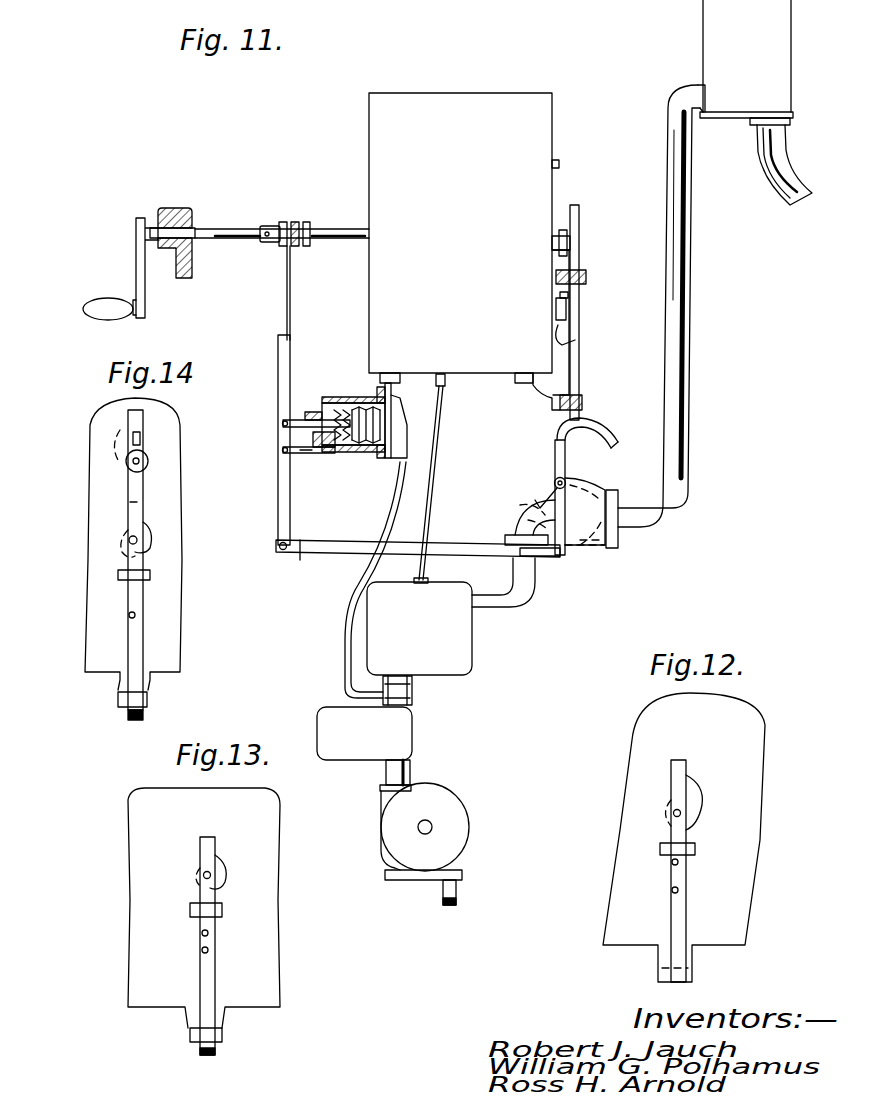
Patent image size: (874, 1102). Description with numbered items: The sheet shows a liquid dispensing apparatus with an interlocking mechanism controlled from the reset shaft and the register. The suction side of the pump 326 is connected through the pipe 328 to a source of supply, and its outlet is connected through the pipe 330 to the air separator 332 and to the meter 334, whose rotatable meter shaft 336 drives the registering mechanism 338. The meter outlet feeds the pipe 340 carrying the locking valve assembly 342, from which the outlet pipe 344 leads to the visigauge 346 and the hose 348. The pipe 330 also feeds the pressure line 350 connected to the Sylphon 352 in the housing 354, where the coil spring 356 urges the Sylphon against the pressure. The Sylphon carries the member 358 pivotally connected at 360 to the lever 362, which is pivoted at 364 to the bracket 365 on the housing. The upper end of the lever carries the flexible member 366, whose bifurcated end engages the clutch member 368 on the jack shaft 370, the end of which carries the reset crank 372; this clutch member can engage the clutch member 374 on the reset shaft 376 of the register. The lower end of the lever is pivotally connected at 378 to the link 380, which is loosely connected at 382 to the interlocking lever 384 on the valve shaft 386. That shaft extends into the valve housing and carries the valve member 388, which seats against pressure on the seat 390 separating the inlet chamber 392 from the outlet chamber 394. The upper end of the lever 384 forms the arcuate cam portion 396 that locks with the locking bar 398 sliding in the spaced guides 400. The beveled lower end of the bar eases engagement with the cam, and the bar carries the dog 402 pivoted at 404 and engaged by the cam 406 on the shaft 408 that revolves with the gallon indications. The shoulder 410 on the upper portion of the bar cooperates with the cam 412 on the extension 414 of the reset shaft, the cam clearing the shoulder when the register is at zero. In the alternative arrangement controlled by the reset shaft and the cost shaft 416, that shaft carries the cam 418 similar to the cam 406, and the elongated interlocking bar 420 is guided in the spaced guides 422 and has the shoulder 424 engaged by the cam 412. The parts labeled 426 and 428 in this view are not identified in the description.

In FIG. 11, the pump 326 is at (456, 830).
In FIG. 11, the pipe 328 is at (458, 892).
In FIG. 11, the pipe 330 is at (412, 770).
In FIG. 11, the air separator 332 is at (412, 740).
In FIG. 11, the meter 334 is at (456, 605).
In FIG. 11, the meter shaft 336 is at (434, 437).
In FIG. 11, the registering mechanism 338 is at (444, 100).
In FIG. 11, the pipe 340 is at (536, 590).
In FIG. 11, the locking valve assembly 342 is at (606, 548).
In FIG. 11, the outlet pipe 344 is at (692, 422).
In FIG. 11, the visigauge 346 is at (728, 106).
In FIG. 11, the hose 348 is at (788, 168).
In FIG. 11, the pressure line 350 is at (345, 615).
In FIG. 11, the Sylphon 352 is at (358, 455).
In FIG. 11, the housing 354 is at (348, 412).
In FIG. 11, the coil spring 356 is at (346, 412).
In FIG. 11, the member 358 is at (302, 420).
In FIG. 11, the pivotal connection 360 is at (284, 420).
In FIG. 11, the lever 362 is at (278, 352).
In FIG. 11, the pivot 364 is at (283, 448).
In FIG. 11, the bracket 365 is at (300, 453).
In FIG. 11, the flexible member 366 is at (292, 300).
In FIG. 11, the clutch member 368 is at (278, 226).
In FIG. 11, the jack shaft 370 is at (210, 232).
In FIG. 11, the reset crank 372 is at (140, 258).
In FIG. 11, the clutch member 374 is at (305, 222).
In FIG. 11, the reset shaft 376 is at (333, 229).
In FIG. 11, the pivotal connection 378 is at (306, 548).
In FIG. 11, the link 380 is at (308, 558).
In FIG. 11, the loose connection 382 is at (565, 556).
In FIG. 11, the interlocking lever 384 is at (558, 478).
In FIG. 11, the valve shaft 386 is at (578, 468).
In FIG. 11, the valve member 388 is at (618, 522).
In FIG. 11, the seat 390 is at (535, 505).
In FIG. 11, the inlet chamber 392 is at (528, 520).
In FIG. 11, the outlet chamber 394 is at (600, 500).
In FIG. 11, the arcuate cam portion 396 is at (601, 424).
In FIG. 11, the locking bar 398 is at (574, 318).
In FIG. 13, the locking bar 398 is at (212, 980).
In FIG. 12, the locking bar 398 is at (686, 840).
In FIG. 11, the spaced guides 400 is at (586, 276).
In FIG. 13, the spaced guides 400 is at (222, 908).
In FIG. 12, the spaced guides 400 is at (697, 848).
In FIG. 13, the dog 402 is at (200, 934).
In FIG. 12, the dog 402 is at (680, 868).
In FIG. 13, the pivot 404 is at (210, 935).
In FIG. 12, the pivot 404 is at (672, 862).
In FIG. 11, the cam 406 is at (575, 340).
In FIG. 13, the cam 406 is at (200, 950).
In FIG. 12, the cam 406 is at (670, 890).
In FIG. 11, the shaft 408 is at (556, 306).
In FIG. 14, the shaft 408 is at (136, 615).
In FIG. 13, the shaft 408 is at (212, 950).
In FIG. 12, the shaft 408 is at (686, 890).
In FIG. 11, the shoulder 410 is at (584, 205).
In FIG. 13, the shoulder 410 is at (216, 840).
In FIG. 12, the shoulder 410 is at (688, 780).
In FIG. 14, the cam 412 is at (150, 537).
In FIG. 13, the cam 412 is at (225, 866).
In FIG. 12, the cam 412 is at (696, 800).
In FIG. 11, the extension 414 is at (560, 236).
In FIG. 14, the extension 414 is at (128, 537).
In FIG. 13, the extension 414 is at (195, 875).
In FIG. 12, the extension 414 is at (670, 815).
In FIG. 11, the cost shaft 416 is at (558, 160).
In FIG. 14, the cost shaft 416 is at (150, 463).
In FIG. 14, the cam 418 is at (106, 424).
In FIG. 14, the interlocking bar 420 is at (145, 608).
In FIG. 14, the spaced guides 422 is at (150, 575).
In FIG. 14, the shoulder 424 is at (140, 520).
In FIG. 14, the pin 426 is at (150, 436).
In FIG. 14, the lug 428 is at (141, 435).